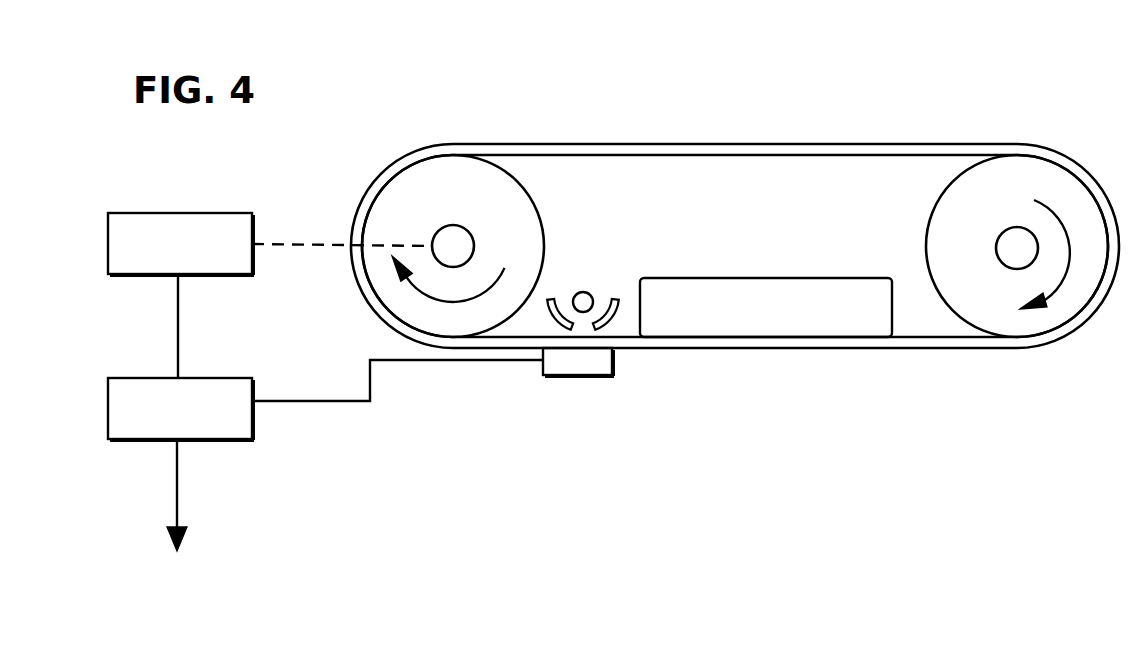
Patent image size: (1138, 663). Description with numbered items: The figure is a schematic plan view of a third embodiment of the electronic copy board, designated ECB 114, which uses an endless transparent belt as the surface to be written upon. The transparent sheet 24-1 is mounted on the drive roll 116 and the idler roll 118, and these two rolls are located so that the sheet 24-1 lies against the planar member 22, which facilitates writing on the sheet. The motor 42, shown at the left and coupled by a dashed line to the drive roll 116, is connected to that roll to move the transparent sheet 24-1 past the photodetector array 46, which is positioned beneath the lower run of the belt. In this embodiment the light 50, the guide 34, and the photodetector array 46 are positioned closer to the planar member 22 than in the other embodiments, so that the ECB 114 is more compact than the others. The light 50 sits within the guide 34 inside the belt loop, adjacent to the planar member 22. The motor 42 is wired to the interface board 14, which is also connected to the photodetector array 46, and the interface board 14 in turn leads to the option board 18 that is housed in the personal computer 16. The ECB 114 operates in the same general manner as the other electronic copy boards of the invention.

The Electronic Copy Board 114 is at (735, 238).
The drive roll 116 is at (393, 185).
The idler roll 118 is at (1072, 192).
The transparent sheet 24-1 is at (735, 293).
The motor 42 is at (237, 218).
The interface board 14 is at (243, 382).
The option board 18 is at (182, 535).
The Personal Computer 16 is at (182, 607).
The photodetector array 46 is at (560, 376).
The light 50 is at (583, 292).
The guide 34 is at (613, 297).
The planar member 22 is at (810, 330).